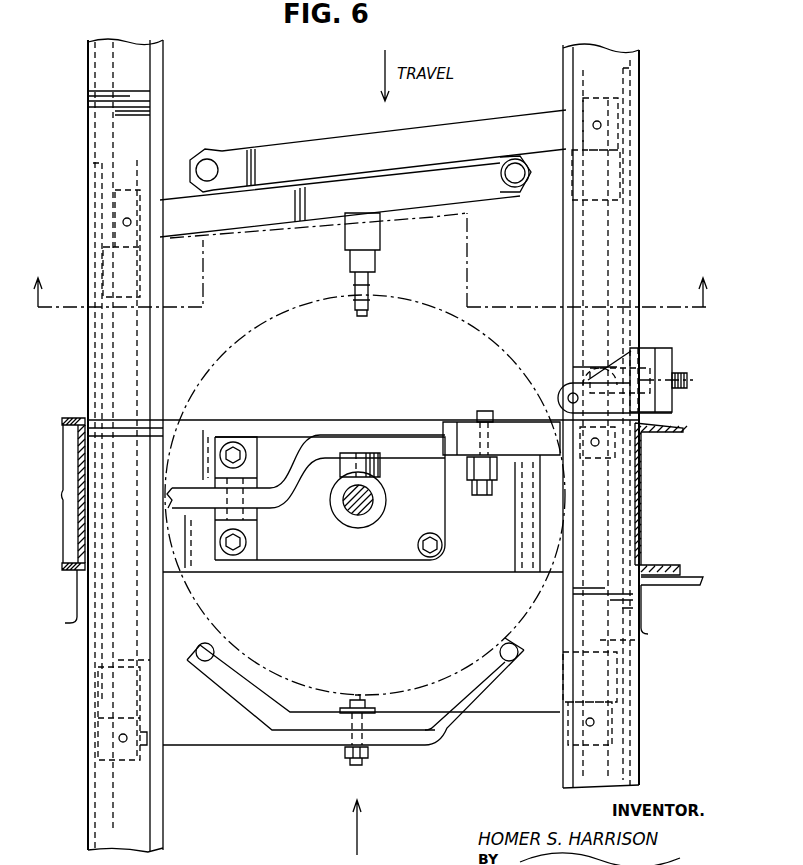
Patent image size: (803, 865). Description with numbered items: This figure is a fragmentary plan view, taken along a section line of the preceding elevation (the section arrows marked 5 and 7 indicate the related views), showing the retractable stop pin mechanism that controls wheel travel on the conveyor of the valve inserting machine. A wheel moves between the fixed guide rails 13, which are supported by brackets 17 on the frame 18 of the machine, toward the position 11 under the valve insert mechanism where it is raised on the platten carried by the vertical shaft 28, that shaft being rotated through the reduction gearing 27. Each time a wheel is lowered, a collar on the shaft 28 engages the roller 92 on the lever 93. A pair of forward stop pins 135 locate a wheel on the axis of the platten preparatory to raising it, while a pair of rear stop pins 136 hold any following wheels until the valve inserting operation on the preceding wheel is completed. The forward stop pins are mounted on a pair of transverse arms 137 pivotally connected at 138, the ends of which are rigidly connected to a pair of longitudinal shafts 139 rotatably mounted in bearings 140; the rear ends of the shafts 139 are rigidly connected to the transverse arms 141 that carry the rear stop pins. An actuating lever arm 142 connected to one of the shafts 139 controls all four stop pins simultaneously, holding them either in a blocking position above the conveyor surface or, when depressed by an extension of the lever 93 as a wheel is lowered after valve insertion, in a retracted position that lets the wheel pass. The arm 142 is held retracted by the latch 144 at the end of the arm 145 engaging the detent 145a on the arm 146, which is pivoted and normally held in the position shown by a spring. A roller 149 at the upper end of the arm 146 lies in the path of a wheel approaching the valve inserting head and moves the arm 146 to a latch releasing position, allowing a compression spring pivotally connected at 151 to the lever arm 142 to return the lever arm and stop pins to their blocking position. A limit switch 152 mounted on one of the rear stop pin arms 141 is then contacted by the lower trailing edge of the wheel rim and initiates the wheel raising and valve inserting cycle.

The section line 5- 5 is at (370, 827).
The section line 7- 7 is at (367, 260).
The position 11 is at (243, 329).
The fixed guide rails 13 is at (138, 154).
The brackets 17 is at (86, 352).
The frame 18 is at (75, 575).
The reduction gearing 27 is at (448, 529).
The vertical shaft 28 is at (373, 508).
The roller 92 is at (380, 470).
The lever 93 is at (419, 445).
The forward stop pins 135 is at (214, 651).
The rear stop pins 136 is at (213, 160).
The transverse arms 137 is at (317, 720).
The pivotal connection 138 is at (358, 760).
The longitudinal shafts 139 is at (132, 653).
The bearings 140 is at (143, 285).
The transverse arms 141 is at (360, 133).
The actuating lever arm 142 is at (545, 451).
The latch 144 is at (687, 381).
The arm 145 is at (620, 336).
The detent 145a is at (672, 401).
The arm 146 is at (673, 362).
The roller 149 is at (560, 392).
The pivotal connection 151 is at (482, 411).
The limit switch 152 is at (371, 287).